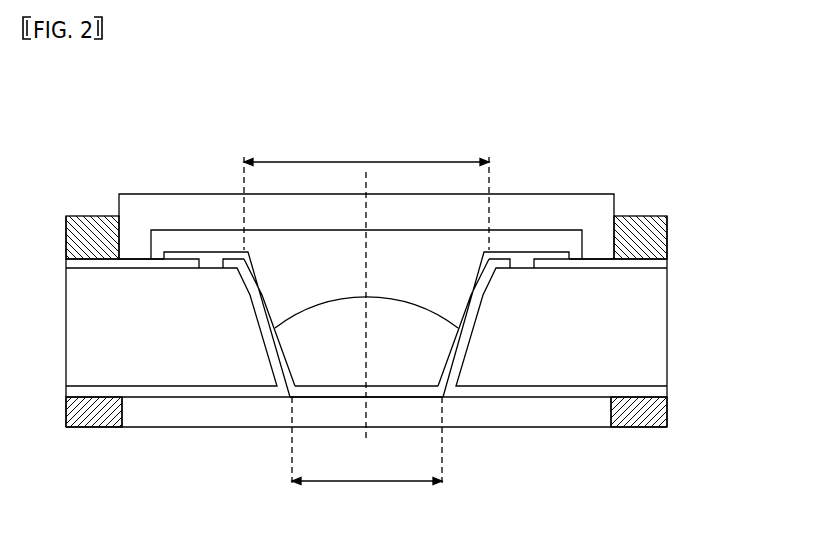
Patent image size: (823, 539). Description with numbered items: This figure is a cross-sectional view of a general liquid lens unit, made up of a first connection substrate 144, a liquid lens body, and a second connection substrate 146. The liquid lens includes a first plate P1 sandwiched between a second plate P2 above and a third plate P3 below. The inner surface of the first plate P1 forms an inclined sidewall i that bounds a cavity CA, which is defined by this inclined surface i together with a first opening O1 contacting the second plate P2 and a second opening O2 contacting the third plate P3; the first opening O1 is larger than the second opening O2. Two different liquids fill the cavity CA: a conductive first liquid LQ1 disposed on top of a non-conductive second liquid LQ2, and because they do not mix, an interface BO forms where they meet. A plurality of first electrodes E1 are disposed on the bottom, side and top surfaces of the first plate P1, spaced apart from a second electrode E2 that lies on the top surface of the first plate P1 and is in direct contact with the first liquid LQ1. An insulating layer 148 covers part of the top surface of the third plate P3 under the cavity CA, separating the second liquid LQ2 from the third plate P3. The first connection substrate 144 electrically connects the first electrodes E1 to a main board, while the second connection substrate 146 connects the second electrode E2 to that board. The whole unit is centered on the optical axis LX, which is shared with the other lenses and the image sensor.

The second connection substrate 146 is at (660, 233).
The first connection substrate 144 is at (662, 408).
The insulating layer 148 is at (323, 392).
The first plate P1 is at (658, 310).
The second plate P2 is at (568, 202).
The third plate P3 is at (202, 422).
The first electrodes E1 is at (650, 387).
The second electrode E2 is at (662, 264).
The inclined surface i is at (248, 300).
The cavity CA is at (305, 259).
The interface BO is at (432, 302).
The first liquid LQ1 is at (433, 240).
The second liquid LQ2 is at (413, 373).
The optical axis LX is at (367, 319).
The first opening O1 is at (366, 193).
The second opening O2 is at (367, 455).